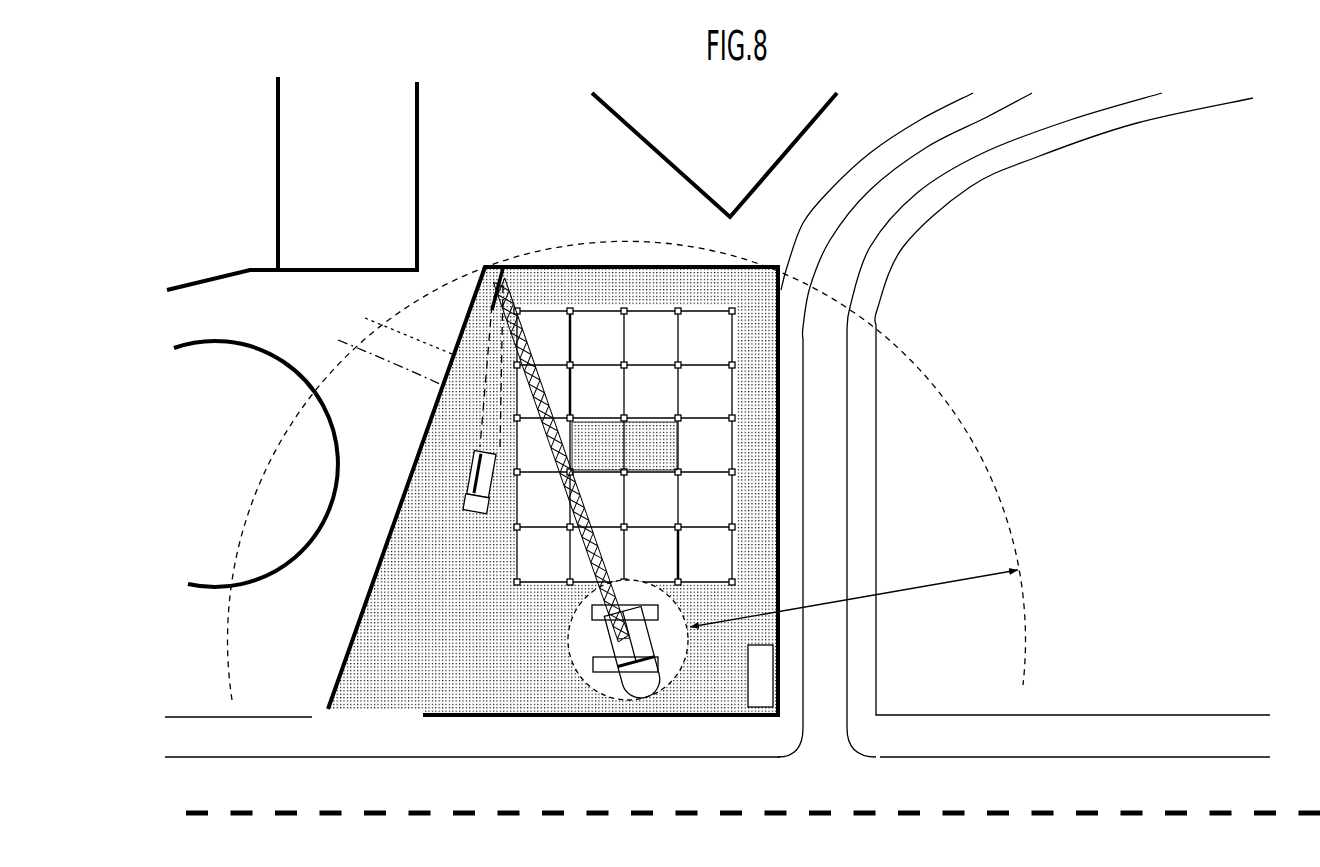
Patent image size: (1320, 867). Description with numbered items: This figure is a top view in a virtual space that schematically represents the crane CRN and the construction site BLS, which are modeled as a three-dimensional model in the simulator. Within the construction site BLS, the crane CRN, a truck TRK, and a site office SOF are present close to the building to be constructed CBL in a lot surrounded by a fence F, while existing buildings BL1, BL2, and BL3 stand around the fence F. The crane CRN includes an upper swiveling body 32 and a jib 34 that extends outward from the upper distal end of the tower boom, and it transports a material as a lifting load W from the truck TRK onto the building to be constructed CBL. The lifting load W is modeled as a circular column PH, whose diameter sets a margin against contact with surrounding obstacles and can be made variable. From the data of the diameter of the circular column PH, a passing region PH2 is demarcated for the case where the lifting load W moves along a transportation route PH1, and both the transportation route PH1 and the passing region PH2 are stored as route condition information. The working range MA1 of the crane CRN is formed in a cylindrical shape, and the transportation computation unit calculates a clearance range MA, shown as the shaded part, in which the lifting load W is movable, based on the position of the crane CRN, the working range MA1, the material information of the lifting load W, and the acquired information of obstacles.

The existing building BL1 is at (200, 503).
The existing building BL2 is at (372, 241).
The existing building BL3 is at (737, 154).
The clearance range MA is at (423, 677).
The working range MA1 is at (923, 588).
The lifting load W is at (484, 266).
The circular column PH is at (517, 265).
The transportation route PH1 is at (371, 354).
The passing region PH2 is at (391, 324).
The crane CRN is at (590, 445).
The jib 34 is at (587, 542).
The upper swiveling body 32 is at (600, 648).
The building to be constructed CBL is at (624, 446).
The truck TRK is at (472, 513).
The fence F is at (558, 718).
The construction site BLS is at (480, 743).
The site office SOF is at (767, 693).